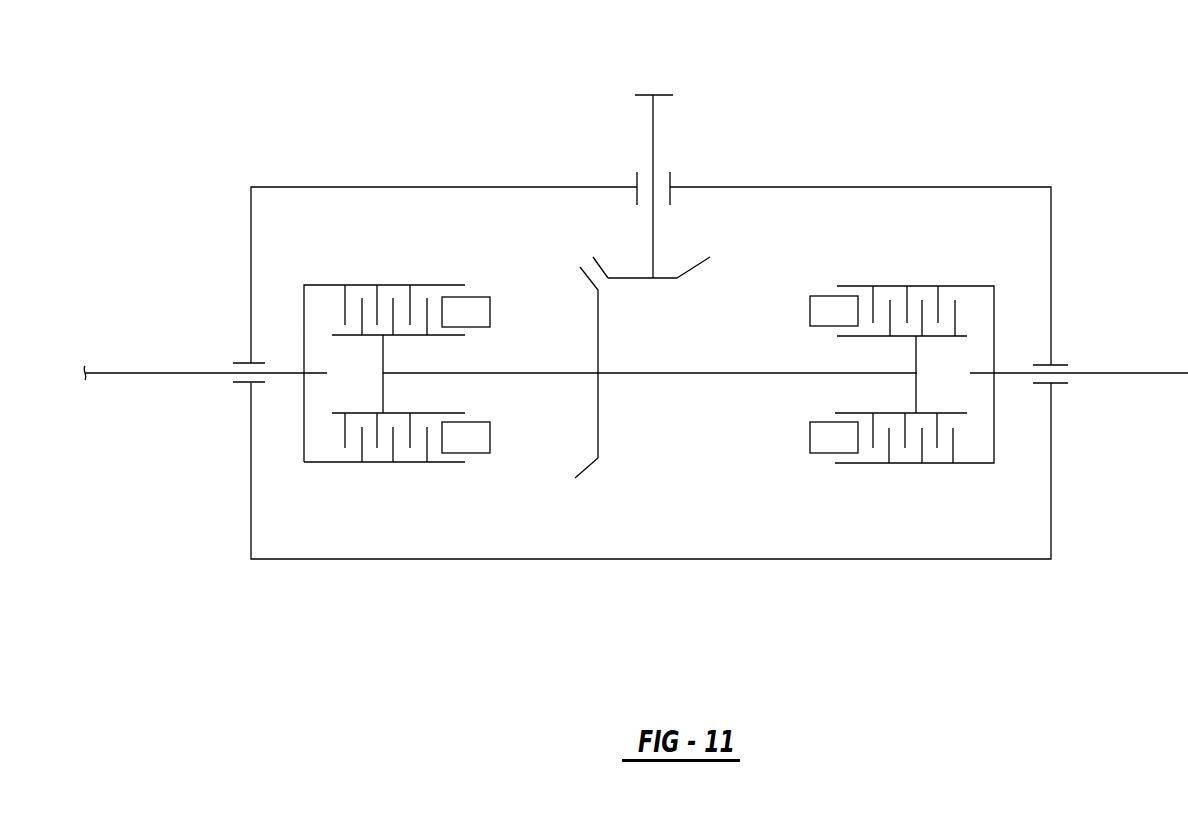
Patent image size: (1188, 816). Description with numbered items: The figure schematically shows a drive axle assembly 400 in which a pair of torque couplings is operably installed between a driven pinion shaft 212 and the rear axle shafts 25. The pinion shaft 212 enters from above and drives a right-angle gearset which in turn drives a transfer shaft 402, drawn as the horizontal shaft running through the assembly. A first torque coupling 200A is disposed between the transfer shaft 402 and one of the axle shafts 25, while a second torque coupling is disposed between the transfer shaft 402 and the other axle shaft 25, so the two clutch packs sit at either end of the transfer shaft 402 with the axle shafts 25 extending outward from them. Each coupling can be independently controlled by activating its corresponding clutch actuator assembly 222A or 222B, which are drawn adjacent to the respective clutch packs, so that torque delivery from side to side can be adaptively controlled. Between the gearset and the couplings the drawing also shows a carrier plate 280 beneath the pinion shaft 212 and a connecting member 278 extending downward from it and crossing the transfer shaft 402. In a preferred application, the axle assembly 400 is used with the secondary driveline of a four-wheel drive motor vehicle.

The drive axle assembly 400 is at (1001, 86).
The pinion shaft 212 is at (653, 140).
The first torque coupling 200A is at (377, 264).
The clutch actuator assembly 222A is at (494, 302).
The clutch actuator assembly 222B is at (786, 434).
The carrier plate 280 is at (677, 278).
The transfer shaft 402 is at (655, 373).
The connecting member 278 is at (583, 468).
The rear axle shafts 25 is at (158, 372).